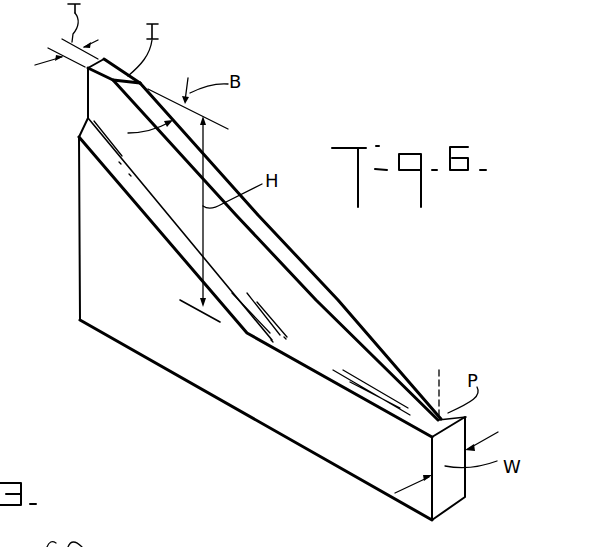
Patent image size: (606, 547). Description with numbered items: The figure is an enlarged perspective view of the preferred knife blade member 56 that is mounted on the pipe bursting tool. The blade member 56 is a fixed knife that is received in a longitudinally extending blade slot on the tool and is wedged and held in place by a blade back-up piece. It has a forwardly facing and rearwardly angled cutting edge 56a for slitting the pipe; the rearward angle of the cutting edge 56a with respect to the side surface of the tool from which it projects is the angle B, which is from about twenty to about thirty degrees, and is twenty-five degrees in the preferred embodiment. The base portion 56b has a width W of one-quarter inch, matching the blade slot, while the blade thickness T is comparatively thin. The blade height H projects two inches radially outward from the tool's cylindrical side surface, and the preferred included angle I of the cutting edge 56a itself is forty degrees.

The knife blade member 56 is at (239, 289).
The cutting edge 56a is at (457, 327).
The base portion 56b is at (128, 332).